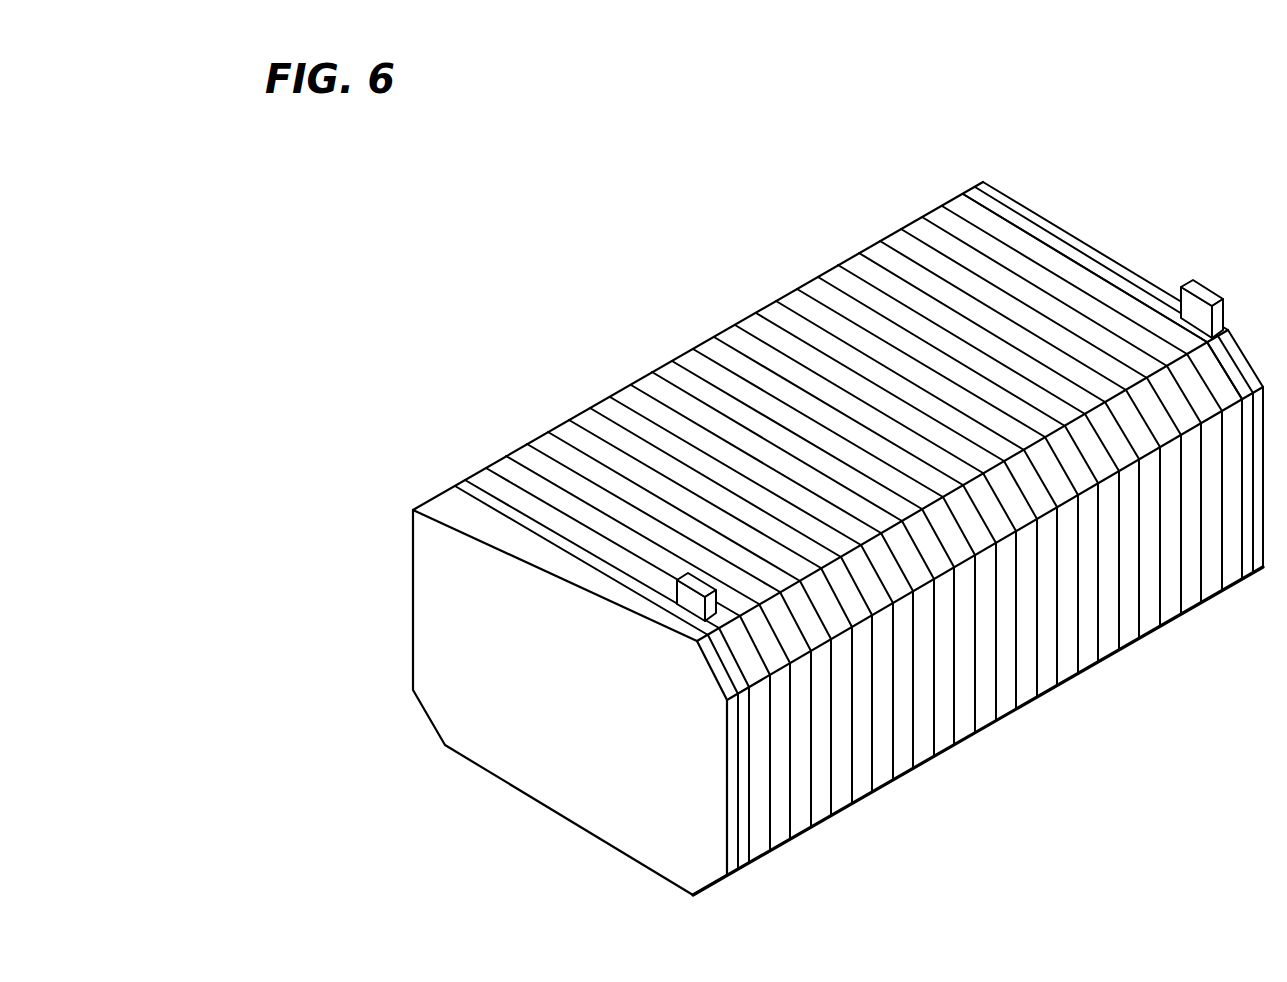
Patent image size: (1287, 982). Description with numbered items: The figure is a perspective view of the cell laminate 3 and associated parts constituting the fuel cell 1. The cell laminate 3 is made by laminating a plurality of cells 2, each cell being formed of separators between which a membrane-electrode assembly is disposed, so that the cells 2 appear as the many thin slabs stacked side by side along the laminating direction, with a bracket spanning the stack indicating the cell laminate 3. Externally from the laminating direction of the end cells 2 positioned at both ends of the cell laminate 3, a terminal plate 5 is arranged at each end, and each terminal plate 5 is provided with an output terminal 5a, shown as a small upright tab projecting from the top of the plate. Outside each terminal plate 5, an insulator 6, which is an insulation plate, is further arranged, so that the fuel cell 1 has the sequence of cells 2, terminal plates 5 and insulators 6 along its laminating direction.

The fuel cell 1 is at (568, 220).
The cell 2 is at (957, 197).
The cell laminate 3 is at (438, 413).
The terminal plate 5 is at (972, 190).
The output terminal 5a is at (695, 610).
The insulator 6 is at (1023, 202).